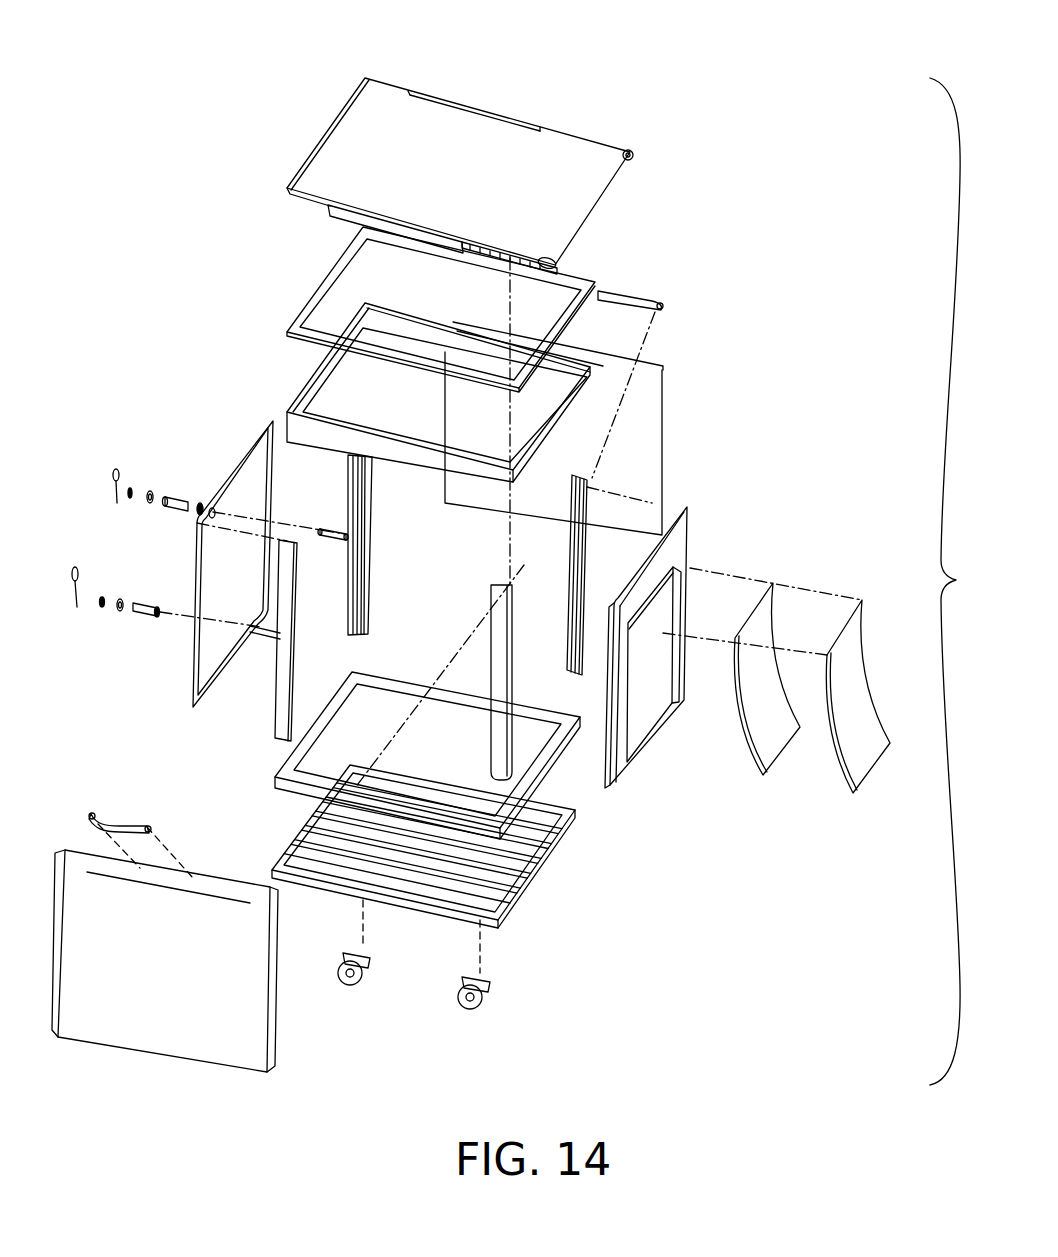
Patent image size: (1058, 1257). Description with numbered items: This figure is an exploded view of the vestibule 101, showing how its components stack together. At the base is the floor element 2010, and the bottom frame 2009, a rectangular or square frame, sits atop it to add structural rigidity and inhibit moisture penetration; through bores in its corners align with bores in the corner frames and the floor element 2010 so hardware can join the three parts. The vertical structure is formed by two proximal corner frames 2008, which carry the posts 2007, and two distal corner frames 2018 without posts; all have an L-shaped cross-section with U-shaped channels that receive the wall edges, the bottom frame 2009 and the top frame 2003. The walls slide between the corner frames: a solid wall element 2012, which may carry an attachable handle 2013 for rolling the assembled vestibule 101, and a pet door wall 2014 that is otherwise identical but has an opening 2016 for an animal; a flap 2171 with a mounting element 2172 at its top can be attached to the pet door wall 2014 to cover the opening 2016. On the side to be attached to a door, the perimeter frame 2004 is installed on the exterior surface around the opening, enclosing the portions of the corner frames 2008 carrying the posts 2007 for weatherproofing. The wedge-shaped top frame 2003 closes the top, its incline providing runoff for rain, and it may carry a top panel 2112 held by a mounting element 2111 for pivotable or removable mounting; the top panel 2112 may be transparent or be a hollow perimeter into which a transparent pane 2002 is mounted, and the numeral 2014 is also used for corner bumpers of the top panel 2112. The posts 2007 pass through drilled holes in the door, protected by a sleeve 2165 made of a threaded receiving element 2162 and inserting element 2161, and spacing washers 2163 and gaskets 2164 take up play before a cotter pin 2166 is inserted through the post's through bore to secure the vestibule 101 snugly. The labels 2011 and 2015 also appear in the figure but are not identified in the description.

The vestibule 101 is at (213, 38).
The mounting element 2111 is at (305, 149).
The top panel 2112 is at (358, 132).
The pet door wall 2014 is at (634, 149).
The transparent pane 2002 is at (321, 271).
The top frame 2003 is at (309, 387).
The perimeter frame 2004 is at (250, 435).
The proximal corner frame 2008 is at (280, 737).
The post 2007 is at (336, 531).
The receiving element 2162 is at (170, 500).
The inserting element 2161 is at (200, 505).
The protective sleeve 2165 is at (210, 516).
The cotter pin 2166 is at (78, 566).
The spacing washer 2163 is at (119, 600).
The gasket 2164 is at (101, 608).
The distal corner frame 2018 is at (572, 560).
The side panel 2015 is at (666, 732).
The opening 2016 is at (670, 663).
The mounting element 2172 is at (731, 622).
The flap 2171 is at (768, 753).
The bottom frame 2009 is at (273, 784).
The floor element 2010 is at (297, 836).
The caster 2011 is at (368, 977).
The solid wall element 2012 is at (255, 1037).
The attachable handle 2013 is at (122, 822).